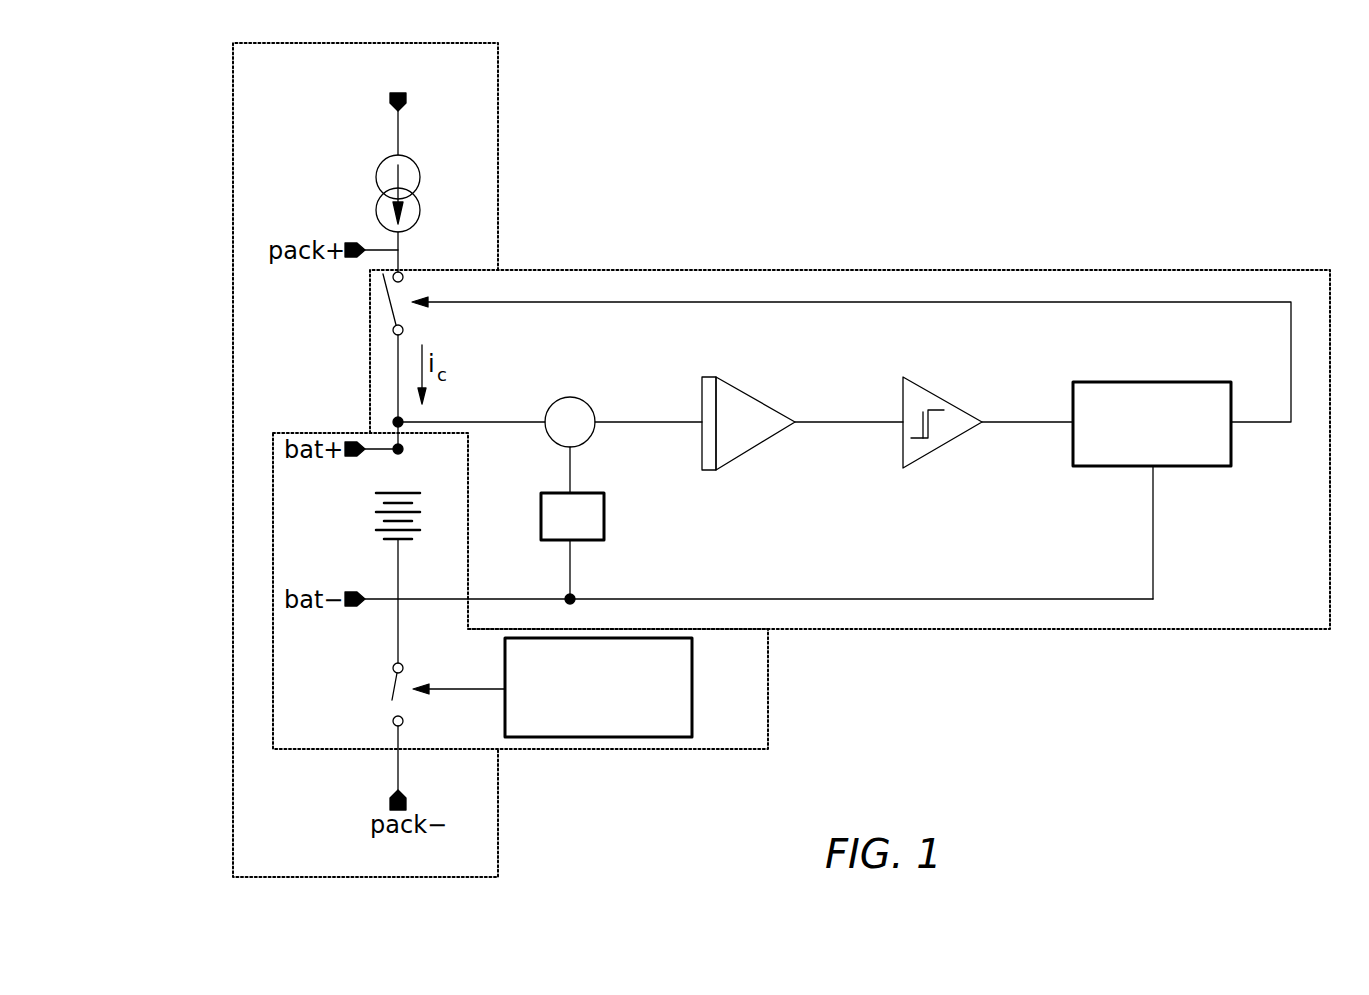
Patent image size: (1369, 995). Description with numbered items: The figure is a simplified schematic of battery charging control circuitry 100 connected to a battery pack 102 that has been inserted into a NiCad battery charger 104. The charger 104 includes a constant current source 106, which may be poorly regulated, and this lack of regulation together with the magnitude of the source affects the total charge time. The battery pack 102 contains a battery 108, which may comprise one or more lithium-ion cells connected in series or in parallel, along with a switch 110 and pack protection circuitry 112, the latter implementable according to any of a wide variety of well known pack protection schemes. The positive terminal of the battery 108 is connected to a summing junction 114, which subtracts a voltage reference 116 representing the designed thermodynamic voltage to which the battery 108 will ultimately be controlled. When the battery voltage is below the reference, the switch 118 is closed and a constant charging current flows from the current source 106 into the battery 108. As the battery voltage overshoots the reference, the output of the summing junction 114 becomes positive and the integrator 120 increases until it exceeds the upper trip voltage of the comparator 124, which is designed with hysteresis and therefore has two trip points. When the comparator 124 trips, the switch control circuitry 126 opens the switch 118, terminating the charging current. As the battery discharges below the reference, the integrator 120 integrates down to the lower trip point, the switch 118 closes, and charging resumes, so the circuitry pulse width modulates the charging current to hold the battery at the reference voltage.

The battery charging control circuitry 100 is at (850, 419).
The battery pack 102 is at (459, 591).
The NiCad battery charger 104 is at (318, 460).
The constant current source 106 is at (365, 185).
The battery 108 is at (365, 516).
The switch 110 is at (392, 697).
The pack protection circuitry 112 is at (564, 715).
The summing junction 114 is at (594, 421).
The voltage reference 116 is at (615, 518).
The switch 118 is at (388, 303).
The integrator 120 is at (764, 415).
The comparator 124 is at (961, 418).
The switch control circuitry 126 is at (1155, 405).